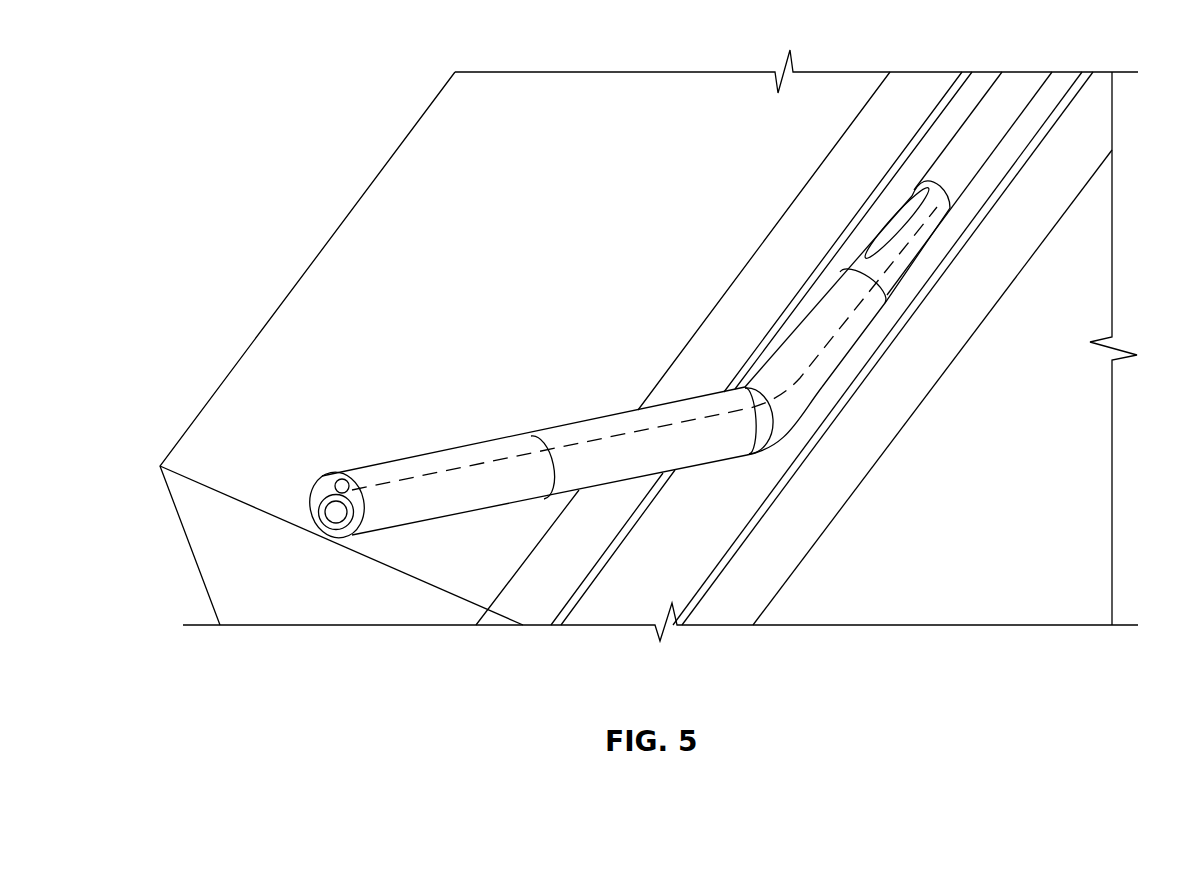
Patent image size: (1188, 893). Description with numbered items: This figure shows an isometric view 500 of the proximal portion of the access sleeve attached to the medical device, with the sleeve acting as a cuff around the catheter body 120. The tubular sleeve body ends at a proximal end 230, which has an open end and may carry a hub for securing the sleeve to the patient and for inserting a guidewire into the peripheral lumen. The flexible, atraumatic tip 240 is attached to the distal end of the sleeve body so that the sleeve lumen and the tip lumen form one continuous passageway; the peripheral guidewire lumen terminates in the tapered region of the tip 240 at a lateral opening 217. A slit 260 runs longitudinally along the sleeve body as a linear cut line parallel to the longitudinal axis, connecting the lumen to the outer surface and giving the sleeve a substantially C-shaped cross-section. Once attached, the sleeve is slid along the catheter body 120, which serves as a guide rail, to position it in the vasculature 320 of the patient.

The assembly 500 is at (357, 165).
The catheter body 120 is at (943, 158).
The lateral opening 217 is at (878, 228).
The tip 240 is at (910, 268).
The slit 260 is at (568, 445).
The proximal end 230 is at (318, 480).
The vasculature 320 is at (745, 500).